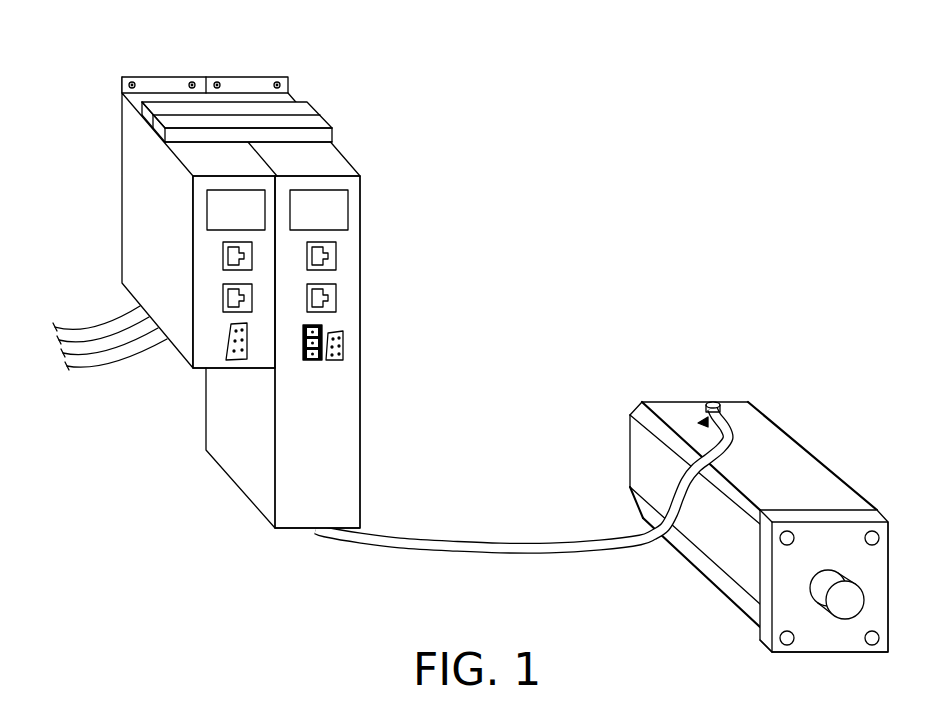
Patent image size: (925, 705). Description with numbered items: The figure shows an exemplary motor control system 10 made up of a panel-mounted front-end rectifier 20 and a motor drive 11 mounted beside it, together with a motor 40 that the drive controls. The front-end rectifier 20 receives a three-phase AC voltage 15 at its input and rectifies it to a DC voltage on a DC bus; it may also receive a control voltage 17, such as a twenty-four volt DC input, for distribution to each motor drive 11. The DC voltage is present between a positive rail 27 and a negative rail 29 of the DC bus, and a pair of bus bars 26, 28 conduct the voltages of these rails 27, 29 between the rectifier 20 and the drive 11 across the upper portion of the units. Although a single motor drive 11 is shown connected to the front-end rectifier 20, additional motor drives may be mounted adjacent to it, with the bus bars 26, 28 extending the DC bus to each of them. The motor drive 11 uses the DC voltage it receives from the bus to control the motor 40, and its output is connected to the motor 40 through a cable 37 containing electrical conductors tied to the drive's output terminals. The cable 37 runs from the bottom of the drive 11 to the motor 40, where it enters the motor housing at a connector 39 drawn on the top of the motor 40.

The motor control system 10 is at (251, 273).
The motor drive 11 is at (360, 262).
The three-phase AC voltage 15 is at (82, 340).
The control voltage 17 is at (108, 353).
The front-end rectifier 20 is at (133, 172).
The bus bar 26 is at (263, 80).
The positive rail 27 is at (228, 102).
The bus bar 28 is at (318, 123).
The negative rail 29 is at (255, 120).
The cable 37 is at (460, 550).
The motor connector 39 is at (712, 405).
The motor 40 is at (784, 430).